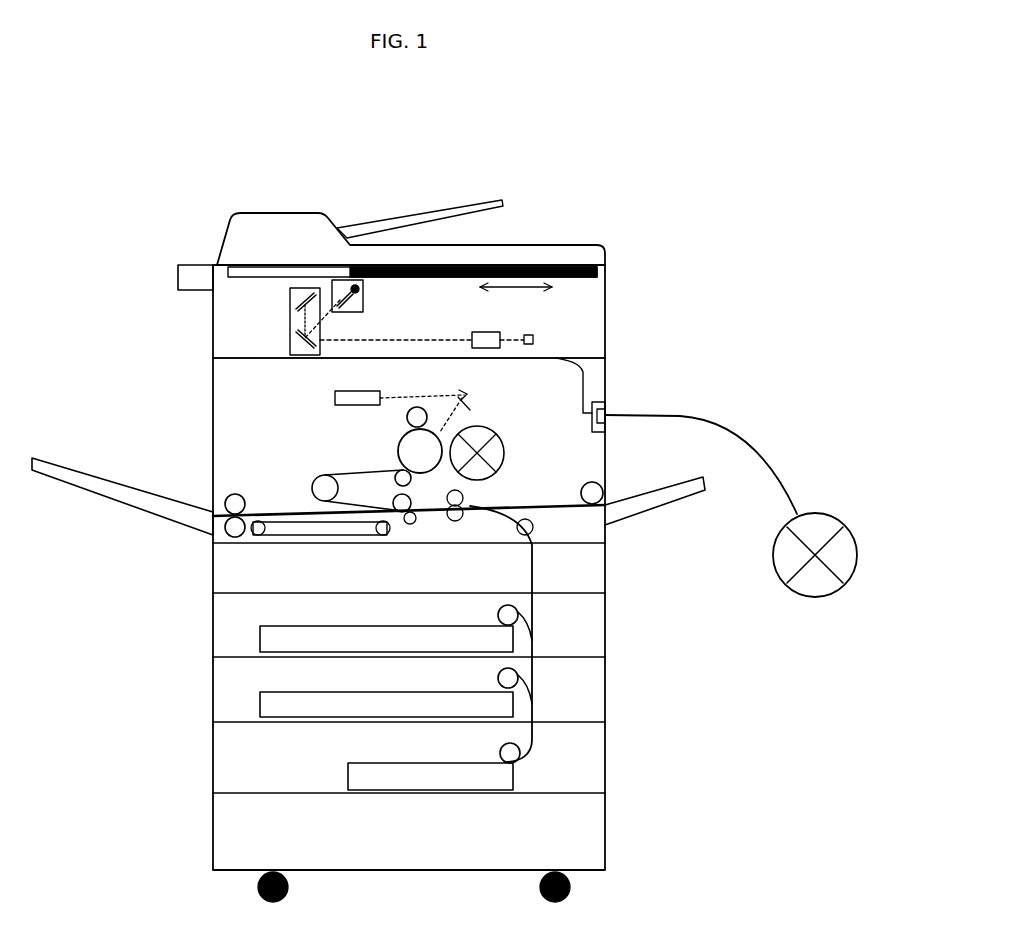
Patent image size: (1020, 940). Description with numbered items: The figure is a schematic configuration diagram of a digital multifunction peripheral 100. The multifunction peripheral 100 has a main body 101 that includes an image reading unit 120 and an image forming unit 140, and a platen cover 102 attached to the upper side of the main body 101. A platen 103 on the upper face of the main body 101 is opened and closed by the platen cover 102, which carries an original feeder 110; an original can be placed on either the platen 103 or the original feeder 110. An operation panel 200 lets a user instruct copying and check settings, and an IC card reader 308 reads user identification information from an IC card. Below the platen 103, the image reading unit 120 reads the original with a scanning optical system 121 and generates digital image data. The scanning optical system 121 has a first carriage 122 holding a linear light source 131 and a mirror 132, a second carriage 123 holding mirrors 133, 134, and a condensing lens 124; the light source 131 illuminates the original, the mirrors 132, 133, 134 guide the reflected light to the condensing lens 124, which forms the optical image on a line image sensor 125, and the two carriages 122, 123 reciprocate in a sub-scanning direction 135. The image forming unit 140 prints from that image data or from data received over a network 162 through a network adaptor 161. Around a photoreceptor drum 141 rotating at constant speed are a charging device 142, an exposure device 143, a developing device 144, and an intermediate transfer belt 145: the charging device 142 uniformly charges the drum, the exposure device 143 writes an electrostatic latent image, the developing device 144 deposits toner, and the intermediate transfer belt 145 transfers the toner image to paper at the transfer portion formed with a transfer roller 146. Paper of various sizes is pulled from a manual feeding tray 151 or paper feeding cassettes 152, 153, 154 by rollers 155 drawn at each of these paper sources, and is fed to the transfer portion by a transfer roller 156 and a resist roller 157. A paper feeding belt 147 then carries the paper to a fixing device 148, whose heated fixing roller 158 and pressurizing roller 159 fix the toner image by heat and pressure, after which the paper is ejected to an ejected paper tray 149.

The multifunction peripheral 100 is at (598, 146).
The main body 101 is at (198, 366).
The platen cover 102 is at (192, 213).
The platen 103 is at (520, 256).
The original feeder 110 is at (275, 212).
The image reading unit 120 is at (607, 331).
The scanning optical system 121 is at (588, 301).
The first carriage 122 is at (345, 308).
The second carriage 123 is at (290, 328).
The condensing lens 124 is at (497, 334).
The line image sensor 125 is at (534, 340).
The linear light source 131 is at (364, 288).
The mirror 132 is at (352, 298).
The mirror 133 is at (296, 297).
The mirror 134 is at (300, 358).
The sub-scanning direction 135 is at (516, 297).
The image forming unit 140 is at (607, 372).
The photoreceptor drum 141 is at (400, 448).
The charging device 142 is at (407, 415).
The exposure device 143 is at (335, 398).
The developing device 144 is at (503, 444).
The intermediate transfer belt 145 is at (330, 476).
The transfer roller 146 is at (411, 526).
The paper feeding belt 147 is at (268, 524).
The fixing device 148 is at (145, 455).
The ejected paper tray 149 is at (52, 462).
The manual feeding tray 151 is at (645, 508).
The paper feeding cassette 152 is at (260, 636).
The paper feeding cassette 153 is at (260, 700).
The paper feeding cassette 154 is at (348, 775).
The pickup roller 155 is at (600, 490).
The transfer roller 156 is at (534, 526).
The resist roller 157 is at (456, 522).
The fixing roller 158 is at (228, 517).
The pressurizing roller 159 is at (232, 495).
The network adaptor 161 is at (607, 409).
The network 162 is at (832, 517).
The operation panel 200 is at (607, 250).
The IC card reader 308 is at (178, 274).